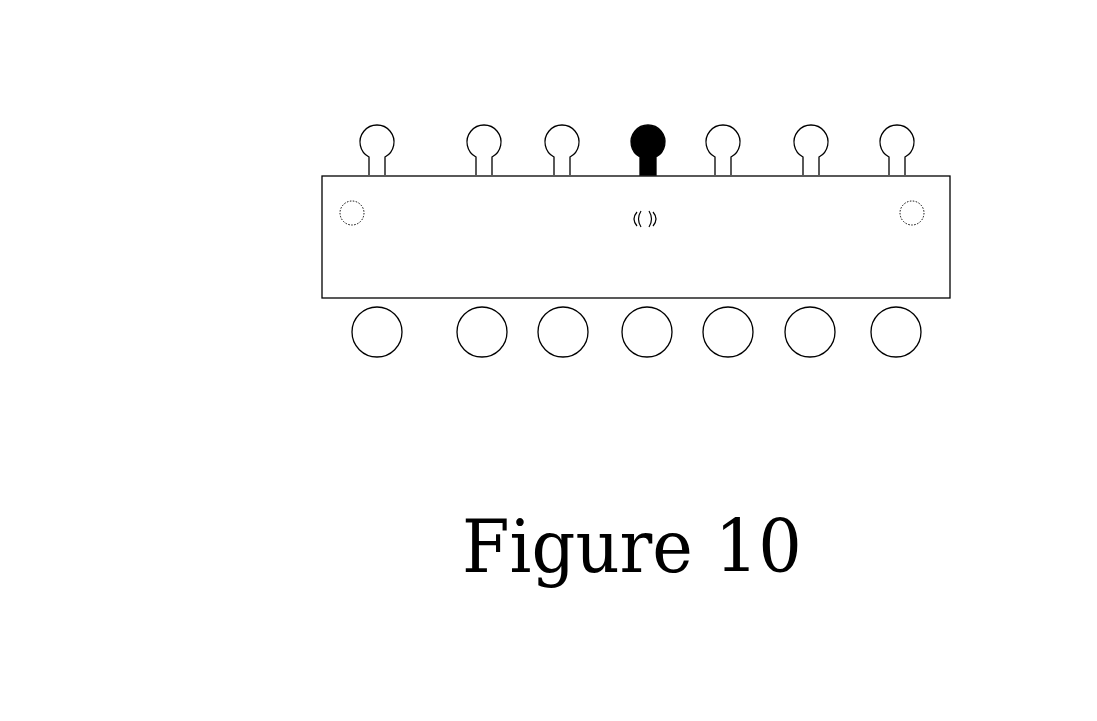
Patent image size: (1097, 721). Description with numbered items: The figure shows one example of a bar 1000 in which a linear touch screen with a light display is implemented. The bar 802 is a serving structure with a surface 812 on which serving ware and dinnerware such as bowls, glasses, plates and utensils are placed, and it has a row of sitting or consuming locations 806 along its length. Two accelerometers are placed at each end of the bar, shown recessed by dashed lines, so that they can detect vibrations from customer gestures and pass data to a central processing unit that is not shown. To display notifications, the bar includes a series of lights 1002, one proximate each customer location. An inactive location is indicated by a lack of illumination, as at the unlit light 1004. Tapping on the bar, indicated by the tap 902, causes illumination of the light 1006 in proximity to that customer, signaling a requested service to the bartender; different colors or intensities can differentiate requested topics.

The bar 1000 is at (265, 176).
The series of lights 1002 is at (818, 95).
The unilluminated light 1004 is at (882, 133).
The illuminated light 1006 is at (661, 129).
The bar 802 is at (951, 215).
The sitting or consuming locations 806 is at (345, 335).
The surface 812 is at (652, 271).
The tap 902 is at (620, 221).